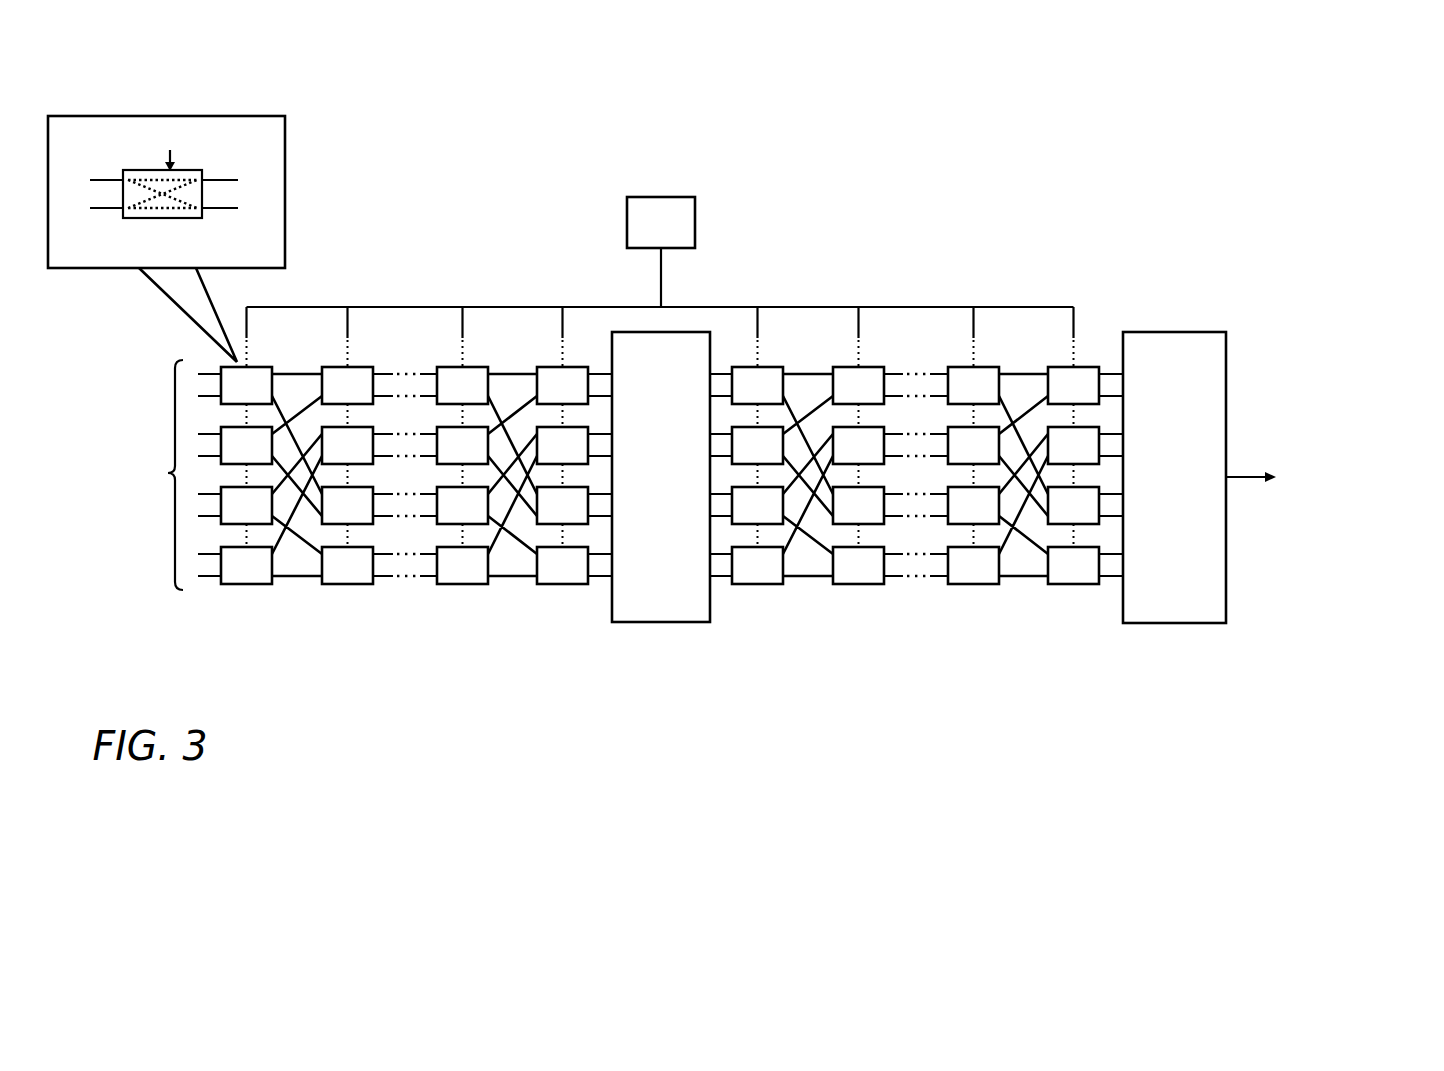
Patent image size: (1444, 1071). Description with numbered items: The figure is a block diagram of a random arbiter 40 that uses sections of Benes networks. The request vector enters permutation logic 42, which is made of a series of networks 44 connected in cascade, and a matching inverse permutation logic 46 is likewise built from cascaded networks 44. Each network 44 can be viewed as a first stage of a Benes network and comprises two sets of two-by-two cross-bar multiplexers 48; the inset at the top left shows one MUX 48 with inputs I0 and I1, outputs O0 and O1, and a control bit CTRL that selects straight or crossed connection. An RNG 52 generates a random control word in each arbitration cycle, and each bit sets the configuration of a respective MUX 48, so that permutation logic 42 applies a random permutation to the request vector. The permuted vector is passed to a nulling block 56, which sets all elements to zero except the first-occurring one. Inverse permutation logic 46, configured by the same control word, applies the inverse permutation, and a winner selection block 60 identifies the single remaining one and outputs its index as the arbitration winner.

The random arbiter 40 is at (1287, 175).
The permutation logic 42 is at (598, 675).
The network 44 is at (390, 625).
The inverse permutation logic 46 is at (1123, 675).
The two-by-two cross-bar multiplexer 48 is at (235, 575).
The RNG 52 is at (627, 222).
The nulling block 56 is at (655, 622).
The winner selection block 60 is at (1173, 623).